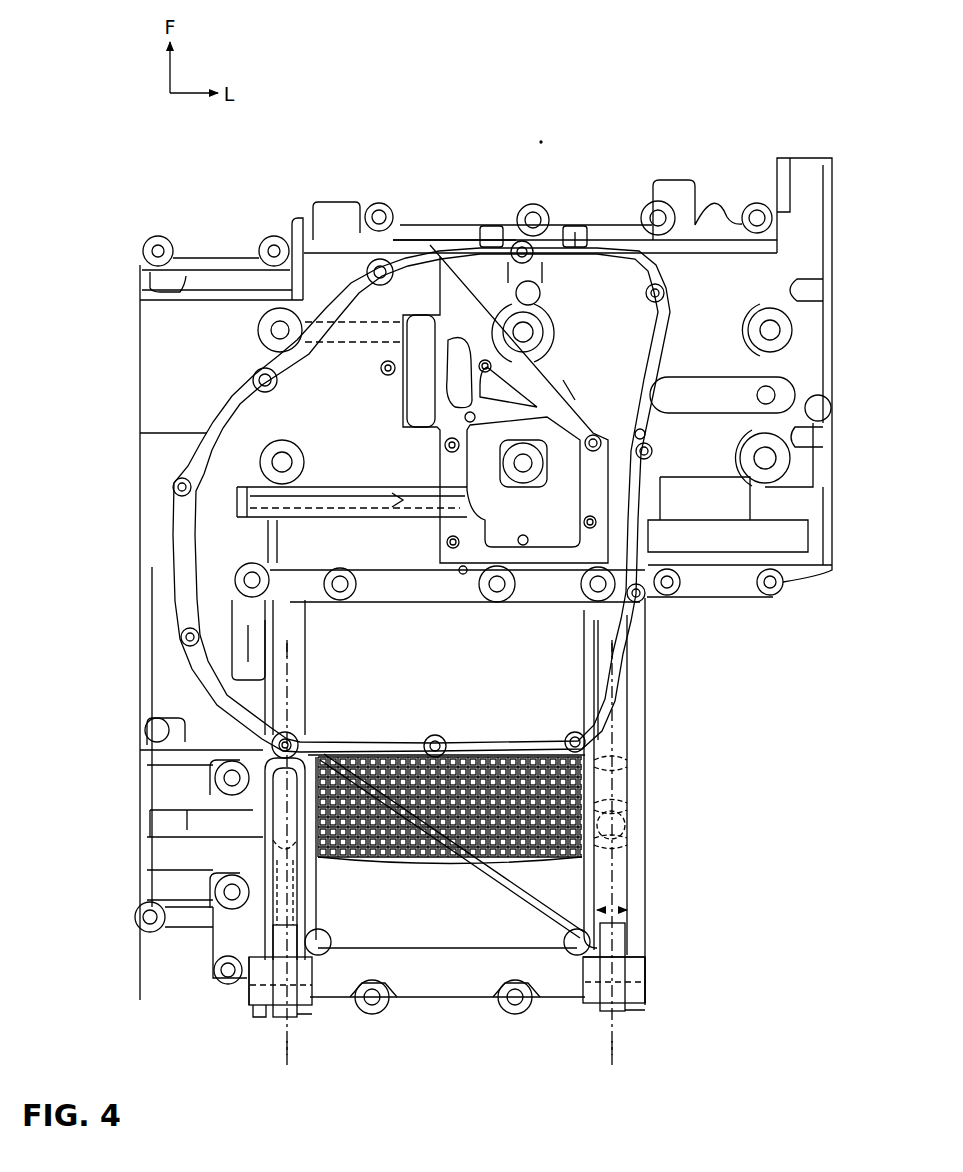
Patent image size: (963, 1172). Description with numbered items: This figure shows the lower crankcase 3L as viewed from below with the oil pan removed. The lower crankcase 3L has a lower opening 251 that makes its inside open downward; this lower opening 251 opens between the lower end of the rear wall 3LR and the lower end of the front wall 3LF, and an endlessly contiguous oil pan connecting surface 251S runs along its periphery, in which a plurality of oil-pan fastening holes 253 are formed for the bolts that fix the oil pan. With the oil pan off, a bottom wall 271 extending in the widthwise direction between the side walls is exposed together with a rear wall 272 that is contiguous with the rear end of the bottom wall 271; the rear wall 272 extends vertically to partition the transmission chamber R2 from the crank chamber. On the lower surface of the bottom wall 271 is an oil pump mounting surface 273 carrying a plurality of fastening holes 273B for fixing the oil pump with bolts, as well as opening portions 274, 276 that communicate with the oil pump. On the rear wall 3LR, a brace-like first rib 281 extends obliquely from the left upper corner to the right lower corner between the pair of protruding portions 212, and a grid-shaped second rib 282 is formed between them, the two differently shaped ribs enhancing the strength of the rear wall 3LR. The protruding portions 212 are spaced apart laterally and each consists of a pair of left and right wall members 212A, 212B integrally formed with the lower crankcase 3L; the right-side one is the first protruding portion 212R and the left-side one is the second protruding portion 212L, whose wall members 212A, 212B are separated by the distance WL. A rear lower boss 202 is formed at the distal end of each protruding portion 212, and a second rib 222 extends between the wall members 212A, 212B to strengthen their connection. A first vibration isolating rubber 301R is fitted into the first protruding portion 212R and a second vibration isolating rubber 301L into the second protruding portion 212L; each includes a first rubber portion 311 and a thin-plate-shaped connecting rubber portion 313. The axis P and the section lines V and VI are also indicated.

The lower crankcase 3L is at (801, 146).
The front wall 3LF is at (477, 246).
The rear wall 3LR is at (557, 865).
The lower opening 251 is at (562, 348).
The oil pan connecting surface 251S is at (582, 757).
The oil-pan fastening holes 253 is at (380, 262).
The bottom wall 271 is at (574, 412).
The rear wall 272 is at (385, 580).
The oil pump mounting surface 273 is at (446, 320).
The fastening holes 273B is at (386, 374).
The opening portion 274 is at (603, 437).
The opening portion 276 is at (420, 352).
The first rib 281 is at (473, 877).
The second rib 282 is at (409, 867).
The second vibration isolating rubber 301L is at (622, 780).
The first vibration isolating rubber 301R is at (276, 824).
The first rubber portion 311 is at (617, 735).
The connecting rubber portion 313 is at (292, 1014).
The rear lower boss 202 is at (250, 994).
The protruding portions 212 is at (446, 1034).
The wall member 212A is at (268, 980).
The wall member 212B is at (346, 978).
The second protruding portion 212L is at (622, 1108).
The first protruding portion 212R is at (248, 1108).
The second rib 222 is at (615, 822).
The axis P is at (247, 985).
The distance WL is at (610, 895).
The transmission chamber R2 is at (560, 683).
The section line V is at (292, 650).
The section line VI is at (616, 650).